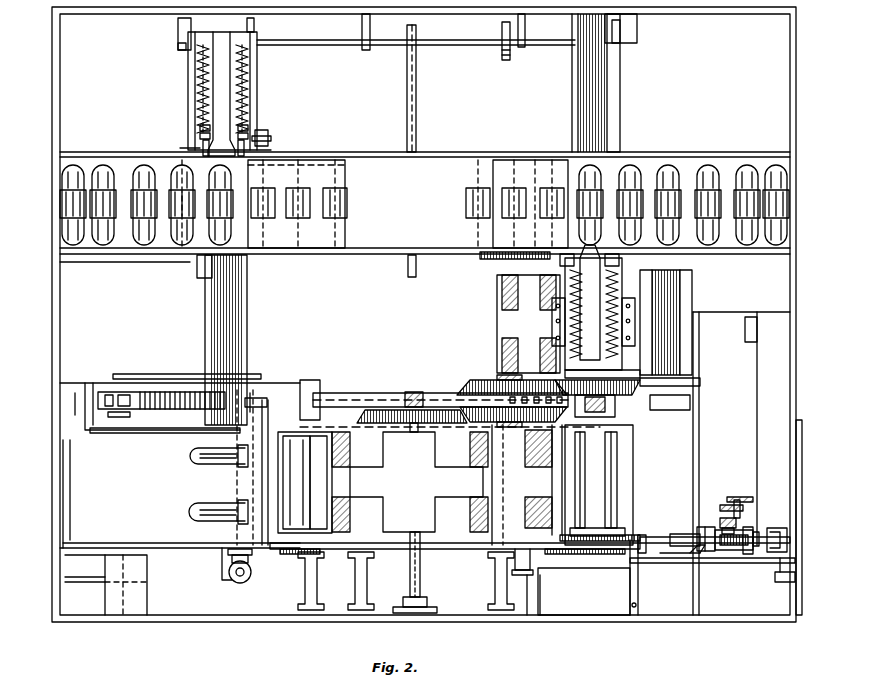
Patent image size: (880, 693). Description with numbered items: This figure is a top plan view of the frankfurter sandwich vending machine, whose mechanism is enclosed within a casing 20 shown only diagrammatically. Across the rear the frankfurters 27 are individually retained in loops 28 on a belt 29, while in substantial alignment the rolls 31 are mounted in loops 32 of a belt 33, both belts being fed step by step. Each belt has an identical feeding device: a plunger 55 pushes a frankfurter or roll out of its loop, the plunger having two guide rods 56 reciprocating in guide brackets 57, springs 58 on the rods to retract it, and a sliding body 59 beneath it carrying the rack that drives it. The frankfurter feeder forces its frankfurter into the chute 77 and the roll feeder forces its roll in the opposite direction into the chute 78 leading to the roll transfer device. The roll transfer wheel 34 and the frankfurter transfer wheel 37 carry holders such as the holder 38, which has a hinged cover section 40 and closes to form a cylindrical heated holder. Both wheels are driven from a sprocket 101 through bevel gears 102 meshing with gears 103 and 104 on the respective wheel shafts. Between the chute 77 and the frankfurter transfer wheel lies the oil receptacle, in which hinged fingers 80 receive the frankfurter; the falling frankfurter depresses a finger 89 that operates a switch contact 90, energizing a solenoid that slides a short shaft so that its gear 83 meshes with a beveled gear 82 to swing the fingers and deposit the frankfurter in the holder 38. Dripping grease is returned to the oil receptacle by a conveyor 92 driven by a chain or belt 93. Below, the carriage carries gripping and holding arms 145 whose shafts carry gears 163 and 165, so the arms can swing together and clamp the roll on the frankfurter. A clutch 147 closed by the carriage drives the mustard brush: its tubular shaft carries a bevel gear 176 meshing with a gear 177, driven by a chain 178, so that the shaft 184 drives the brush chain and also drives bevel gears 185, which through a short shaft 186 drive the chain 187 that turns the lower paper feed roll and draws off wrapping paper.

The casing 20 is at (60, 323).
The frankfurter 27 is at (150, 240).
The loop 28 is at (142, 222).
The belt 29 is at (298, 178).
The roll 31 is at (707, 168).
The loop 32 is at (742, 190).
The belt 33 is at (525, 170).
The wheel 34 is at (496, 306).
The wheel 37 is at (419, 518).
The holder 38 is at (305, 482).
The cover section 40 is at (320, 485).
The plunger 55 is at (228, 106).
The guide rod 56 is at (200, 85).
The guide bracket 57 is at (205, 140).
The spring 58 is at (204, 116).
The sliding body 59 is at (242, 75).
The chute 77 is at (206, 334).
The chute 78 is at (576, 110).
The hinged fingers 80 is at (196, 454).
The beveled gear 82 is at (250, 566).
The gear 83 is at (242, 584).
The finger 89 is at (212, 455).
The switch contact 90 is at (268, 406).
The conveyor 92 is at (143, 392).
The chain or belt 93 is at (165, 380).
The sprocket 101 is at (520, 398).
The bevel gears 102 is at (470, 392).
The gear 103 is at (640, 388).
The gear 104 is at (380, 410).
The gripping and holding arms or plates 145 is at (613, 478).
The clutch 147 is at (717, 530).
The gear 163 is at (636, 547).
The gear 165 is at (575, 545).
The bevel gear 176 is at (745, 552).
The gear 177 is at (725, 517).
The chain 178 is at (740, 497).
The shaft 184 is at (752, 530).
The bevel gears 185 is at (777, 528).
The short shaft 186 is at (779, 584).
The chain 187 is at (598, 570).